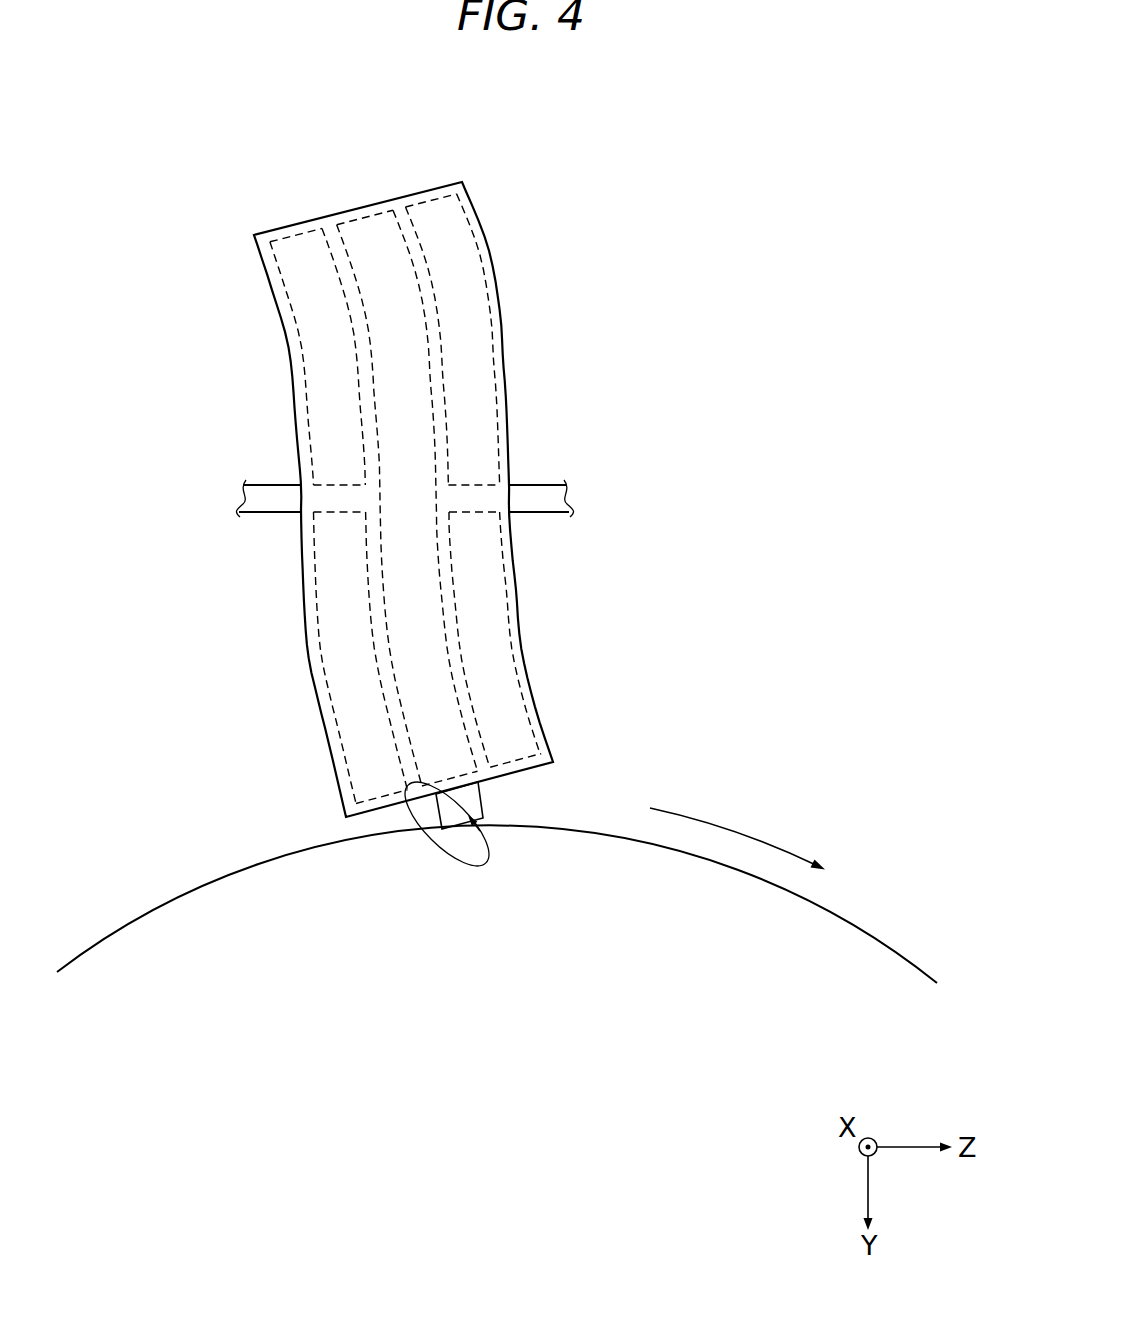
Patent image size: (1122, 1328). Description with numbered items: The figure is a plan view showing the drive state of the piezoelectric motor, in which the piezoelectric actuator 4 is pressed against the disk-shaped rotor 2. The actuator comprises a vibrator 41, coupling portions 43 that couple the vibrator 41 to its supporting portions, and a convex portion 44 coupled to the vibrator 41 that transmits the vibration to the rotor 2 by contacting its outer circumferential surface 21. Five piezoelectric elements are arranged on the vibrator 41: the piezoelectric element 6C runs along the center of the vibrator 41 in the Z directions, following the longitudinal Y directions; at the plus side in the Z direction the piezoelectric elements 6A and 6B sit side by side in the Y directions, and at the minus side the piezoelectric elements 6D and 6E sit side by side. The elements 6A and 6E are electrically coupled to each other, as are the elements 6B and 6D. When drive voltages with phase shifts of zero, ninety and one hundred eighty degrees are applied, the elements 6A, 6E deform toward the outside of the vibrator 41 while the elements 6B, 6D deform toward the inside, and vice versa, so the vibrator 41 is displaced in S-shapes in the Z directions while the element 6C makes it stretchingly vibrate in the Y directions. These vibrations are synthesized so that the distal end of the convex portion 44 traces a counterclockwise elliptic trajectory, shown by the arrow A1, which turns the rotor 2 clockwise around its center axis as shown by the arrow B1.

The piezoelectric actuator 4 is at (266, 176).
The vibrator 41 is at (492, 243).
The coupling portions 43 is at (262, 493).
The convex portion 44 is at (464, 796).
The piezoelectric element 6A is at (485, 643).
The piezoelectric element 6B is at (470, 327).
The piezoelectric element 6C is at (390, 310).
The piezoelectric element 6D is at (345, 660).
The piezoelectric element 6E is at (330, 370).
The rotor 2 is at (156, 950).
The outer circumferential surface 21 is at (239, 870).
The arrow A1 is at (447, 835).
The arrow B1 is at (737, 833).